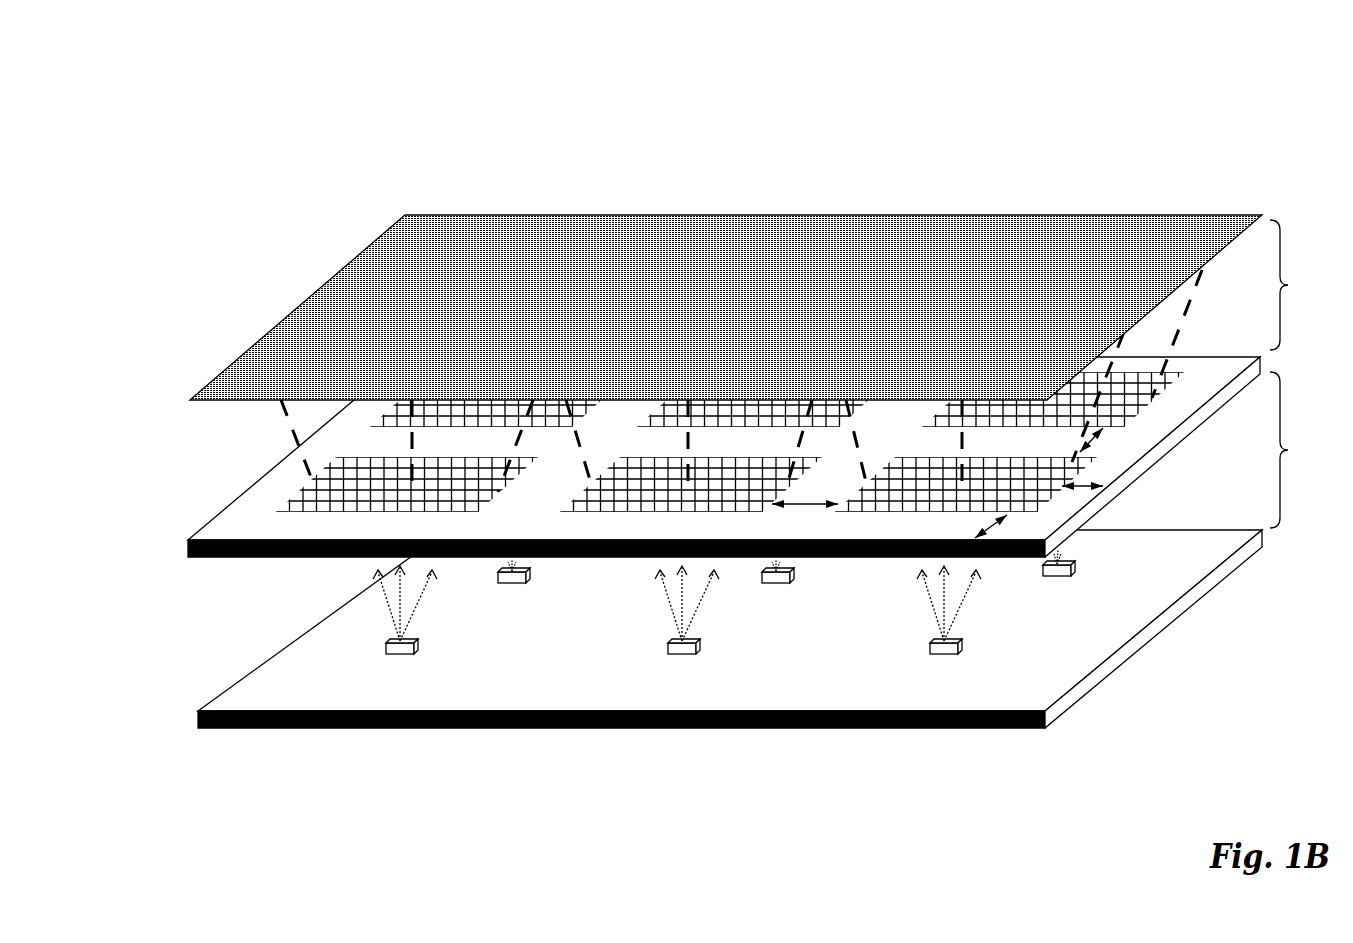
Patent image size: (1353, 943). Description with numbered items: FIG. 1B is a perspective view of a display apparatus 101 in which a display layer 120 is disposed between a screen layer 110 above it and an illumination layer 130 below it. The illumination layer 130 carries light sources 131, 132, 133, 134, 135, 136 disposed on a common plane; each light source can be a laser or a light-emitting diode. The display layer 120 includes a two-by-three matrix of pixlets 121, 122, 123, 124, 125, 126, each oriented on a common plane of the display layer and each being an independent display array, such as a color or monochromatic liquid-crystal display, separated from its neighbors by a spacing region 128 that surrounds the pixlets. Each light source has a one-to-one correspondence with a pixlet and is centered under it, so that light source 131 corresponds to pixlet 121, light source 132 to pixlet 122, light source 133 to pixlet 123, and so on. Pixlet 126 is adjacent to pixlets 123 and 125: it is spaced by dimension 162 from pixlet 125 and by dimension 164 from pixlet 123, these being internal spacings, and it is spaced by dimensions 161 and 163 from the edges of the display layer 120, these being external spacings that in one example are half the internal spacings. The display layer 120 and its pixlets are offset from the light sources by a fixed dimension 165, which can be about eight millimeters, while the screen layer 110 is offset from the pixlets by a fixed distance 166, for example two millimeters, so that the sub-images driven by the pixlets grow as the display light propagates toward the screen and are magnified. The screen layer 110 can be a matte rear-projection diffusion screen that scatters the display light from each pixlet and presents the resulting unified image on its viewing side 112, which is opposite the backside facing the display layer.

The display apparatus 101 is at (325, 135).
The screen layer 110 is at (298, 310).
The viewing side 112 is at (1045, 240).
The display layer 120 is at (240, 502).
The pixlet 121 is at (383, 431).
The pixlet 122 is at (648, 426).
The pixlet 123 is at (933, 421).
The pixlet 124 is at (420, 514).
The pixlet 125 is at (683, 515).
The pixlet 126 is at (901, 514).
The spacing region 128 is at (268, 529).
The illumination layer 130 is at (258, 667).
The light source 131 is at (502, 585).
The light source 132 is at (774, 588).
The light source 133 is at (1050, 586).
The light source 134 is at (392, 656).
The light source 135 is at (677, 656).
The light source 136 is at (937, 656).
The dimension 161 is at (985, 526).
The dimension 162 is at (815, 506).
The dimension 163 is at (1066, 493).
The dimension 164 is at (1100, 439).
The fixed dimension 165 is at (1301, 450).
The fixed distance 166 is at (1298, 285).